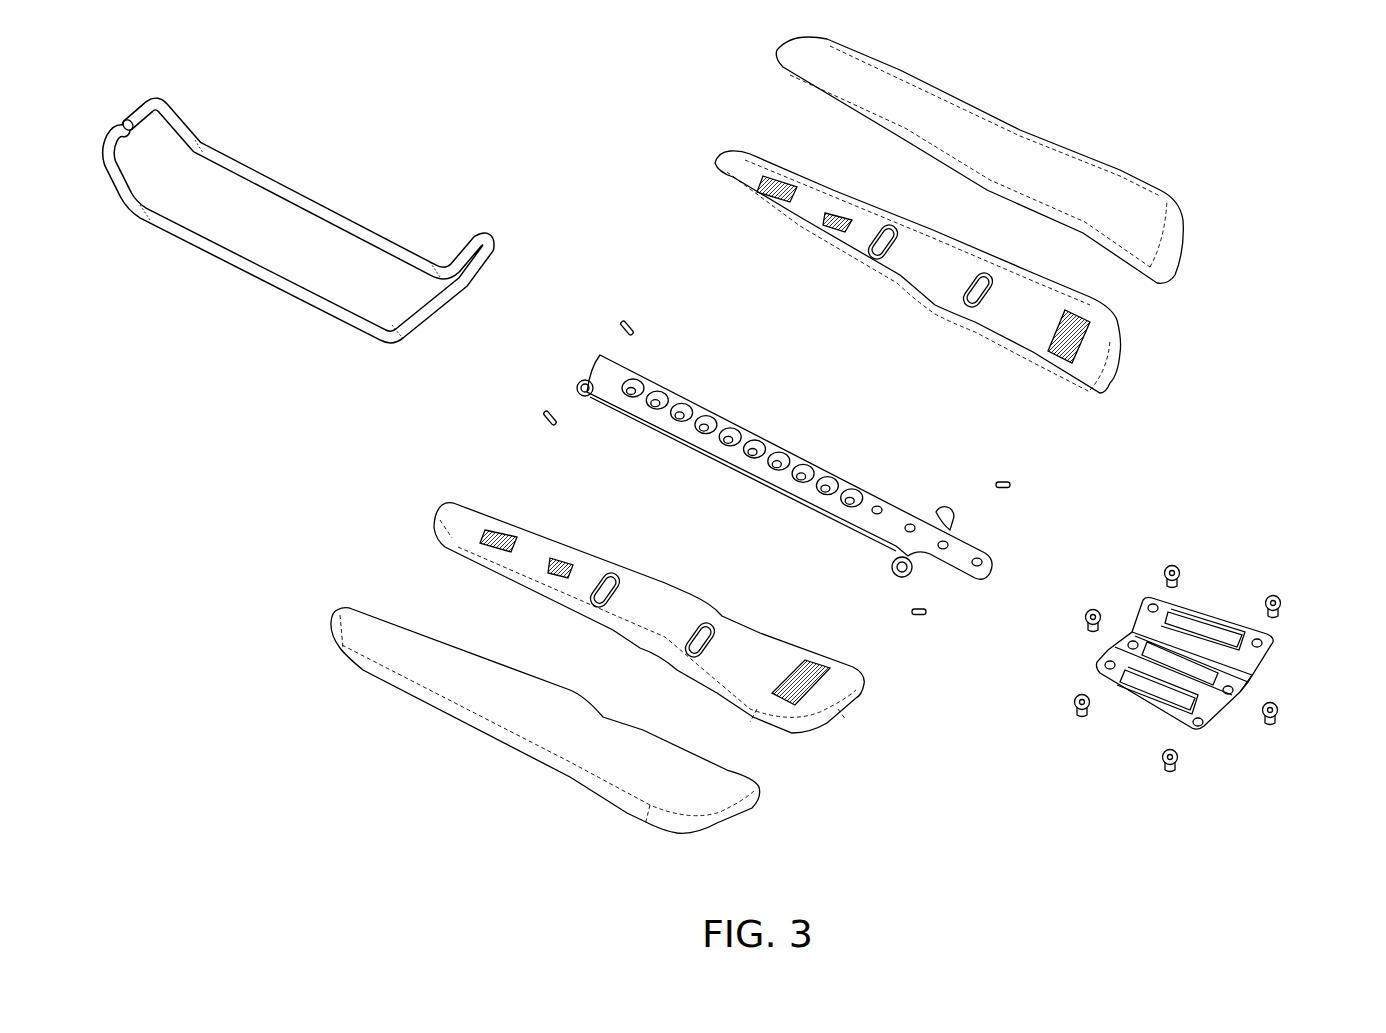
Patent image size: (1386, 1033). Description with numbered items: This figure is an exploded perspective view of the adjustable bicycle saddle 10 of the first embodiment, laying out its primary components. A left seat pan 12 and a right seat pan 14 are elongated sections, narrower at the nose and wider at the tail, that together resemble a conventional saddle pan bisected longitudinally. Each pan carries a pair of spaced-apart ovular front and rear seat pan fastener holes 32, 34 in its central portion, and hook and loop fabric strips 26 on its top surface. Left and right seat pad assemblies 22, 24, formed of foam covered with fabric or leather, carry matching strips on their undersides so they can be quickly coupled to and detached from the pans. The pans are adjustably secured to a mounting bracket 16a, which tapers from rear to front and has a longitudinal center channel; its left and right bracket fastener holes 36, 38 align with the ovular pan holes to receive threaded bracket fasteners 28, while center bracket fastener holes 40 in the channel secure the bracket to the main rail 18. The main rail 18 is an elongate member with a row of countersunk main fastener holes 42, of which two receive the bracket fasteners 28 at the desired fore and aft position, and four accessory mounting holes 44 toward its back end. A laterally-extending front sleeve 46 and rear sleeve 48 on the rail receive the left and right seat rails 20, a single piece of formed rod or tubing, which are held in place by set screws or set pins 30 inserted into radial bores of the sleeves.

The adjustable bicycle saddle 10 is at (1275, 155).
The left seat pan 12 is at (456, 503).
The right seat pan 14 is at (800, 407).
The mounting bracket 16a is at (1185, 650).
The main rail 18 is at (755, 456).
The left and right seat rails 20 is at (328, 208).
The left seat pad assembly 22 is at (432, 650).
The right seat pad assembly 24 is at (905, 95).
The hook and loop fabric strips 26 is at (772, 199).
The bracket fasteners 28 is at (1274, 596).
The set screw or set pin 30 is at (618, 322).
The front seat pan fastener hole 32 is at (867, 259).
The rear seat pan fastener hole 34 is at (963, 306).
The left bracket fastener holes 36 is at (1104, 662).
The right bracket fastener holes 38 is at (1153, 602).
The center bracket fastener holes 40 is at (1130, 640).
The main fastener holes 42 is at (634, 378).
The accessory mounting holes 44 is at (879, 504).
The front sleeve 46 is at (898, 578).
The rear sleeve 48 is at (576, 388).